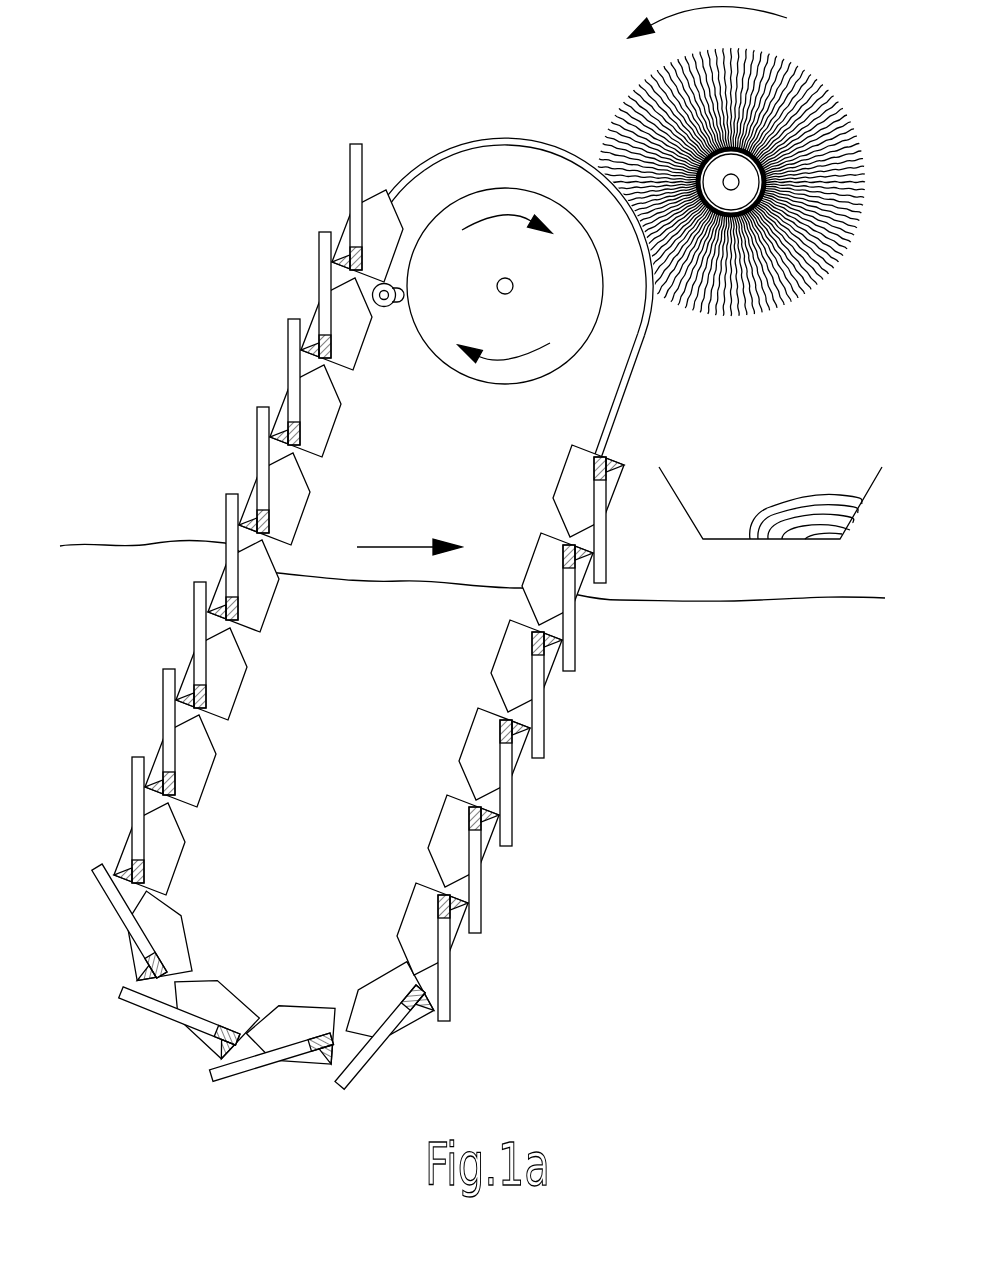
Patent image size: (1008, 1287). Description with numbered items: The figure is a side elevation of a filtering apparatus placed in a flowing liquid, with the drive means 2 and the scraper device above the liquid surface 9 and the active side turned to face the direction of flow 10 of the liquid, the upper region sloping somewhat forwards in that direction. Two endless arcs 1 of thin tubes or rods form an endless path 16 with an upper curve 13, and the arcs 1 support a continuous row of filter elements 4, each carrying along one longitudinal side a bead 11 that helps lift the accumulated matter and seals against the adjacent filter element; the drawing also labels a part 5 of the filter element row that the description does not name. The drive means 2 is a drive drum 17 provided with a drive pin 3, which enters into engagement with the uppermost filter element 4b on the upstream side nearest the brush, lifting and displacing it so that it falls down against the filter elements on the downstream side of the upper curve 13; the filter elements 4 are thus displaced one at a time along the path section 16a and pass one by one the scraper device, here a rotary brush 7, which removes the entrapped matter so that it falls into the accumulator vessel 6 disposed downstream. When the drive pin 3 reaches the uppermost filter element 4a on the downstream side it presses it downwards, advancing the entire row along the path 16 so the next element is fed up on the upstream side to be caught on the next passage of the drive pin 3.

The endless arc 1 is at (453, 146).
The drive means 2 is at (431, 333).
The drive pin 3 is at (384, 308).
The filter element 4 is at (540, 712).
The uppermost filter element on the downstream side 4a is at (633, 470).
The filter element located most proximate the brush on the upstream side 4b is at (350, 166).
The tine carrier 5 is at (490, 787).
The accumulator vessel 6 is at (865, 495).
The rotary brush 7 is at (811, 80).
The liquid surface 9 is at (106, 544).
The direction of liquid flow 10 is at (377, 547).
The bead 11 is at (318, 262).
The upper curve 13 is at (548, 144).
The endless path 16 is at (623, 392).
The path section 16a is at (421, 165).
The drive drum 17 is at (495, 200).